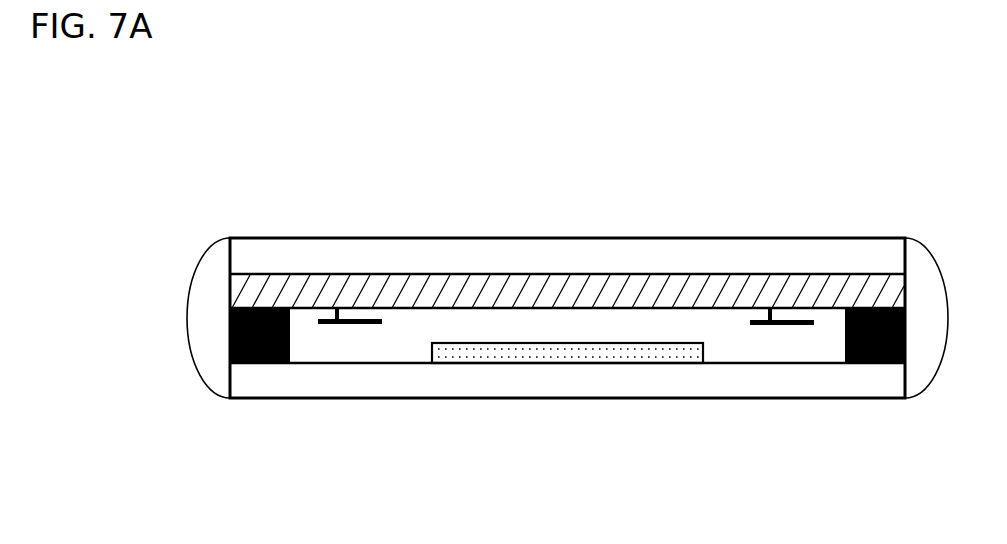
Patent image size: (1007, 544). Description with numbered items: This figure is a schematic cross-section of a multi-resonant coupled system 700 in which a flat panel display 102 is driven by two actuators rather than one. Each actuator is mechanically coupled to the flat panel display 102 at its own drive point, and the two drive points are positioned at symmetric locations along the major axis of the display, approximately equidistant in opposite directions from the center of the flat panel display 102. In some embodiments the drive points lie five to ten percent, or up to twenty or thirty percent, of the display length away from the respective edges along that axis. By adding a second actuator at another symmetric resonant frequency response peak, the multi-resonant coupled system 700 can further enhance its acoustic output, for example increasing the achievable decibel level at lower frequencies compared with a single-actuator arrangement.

The multi-resonant coupled system 700 is at (112, 178).
The flat panel display 102 is at (212, 240).